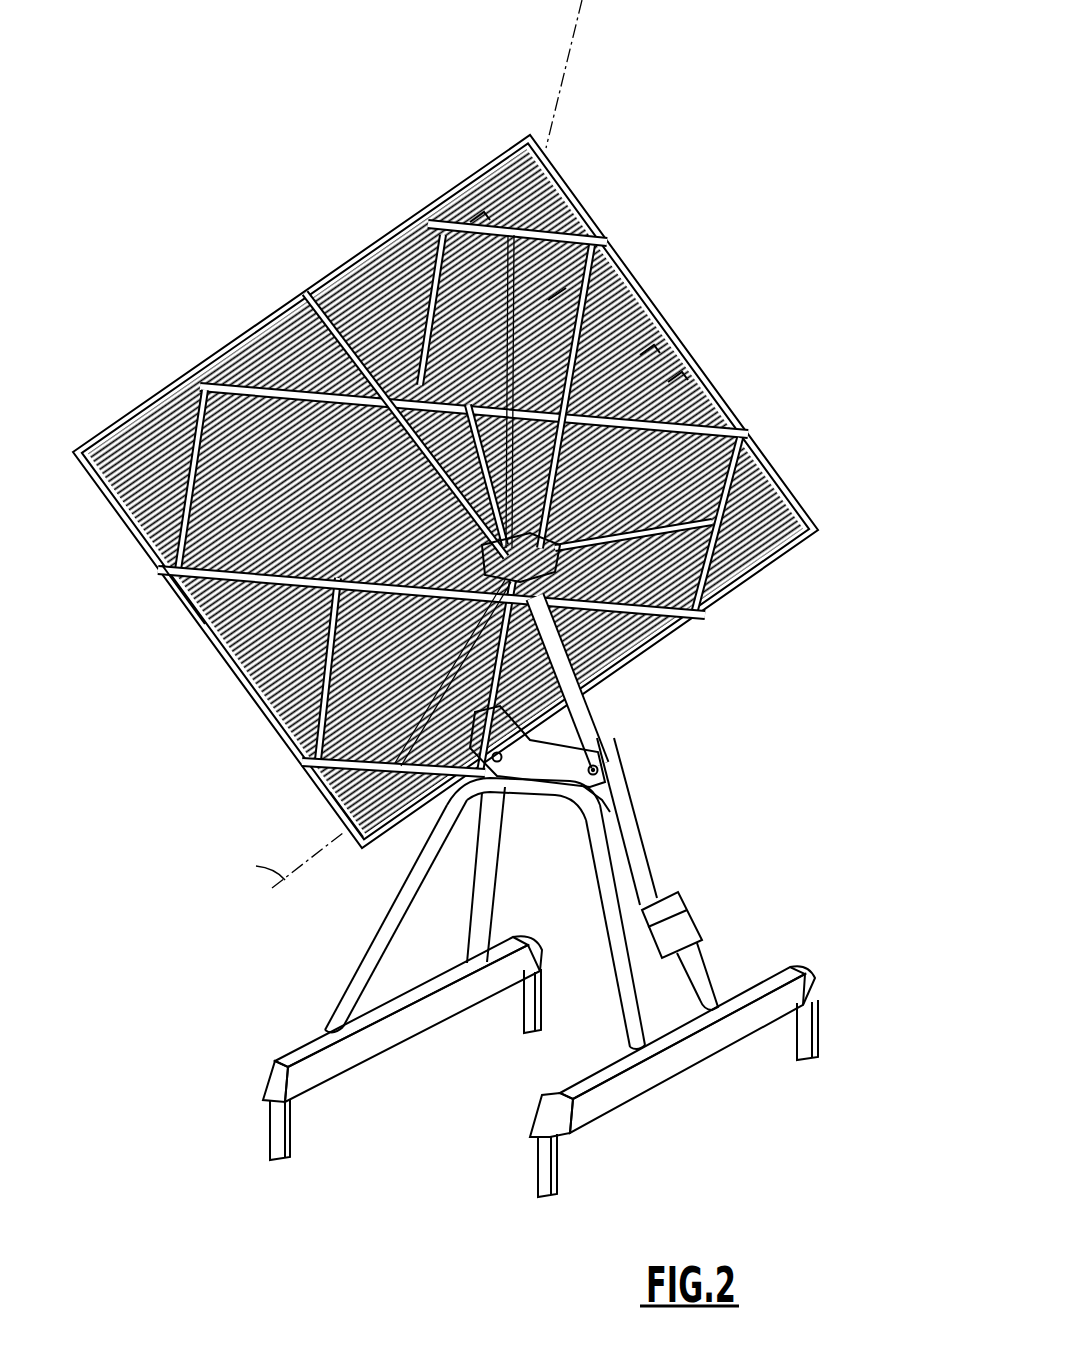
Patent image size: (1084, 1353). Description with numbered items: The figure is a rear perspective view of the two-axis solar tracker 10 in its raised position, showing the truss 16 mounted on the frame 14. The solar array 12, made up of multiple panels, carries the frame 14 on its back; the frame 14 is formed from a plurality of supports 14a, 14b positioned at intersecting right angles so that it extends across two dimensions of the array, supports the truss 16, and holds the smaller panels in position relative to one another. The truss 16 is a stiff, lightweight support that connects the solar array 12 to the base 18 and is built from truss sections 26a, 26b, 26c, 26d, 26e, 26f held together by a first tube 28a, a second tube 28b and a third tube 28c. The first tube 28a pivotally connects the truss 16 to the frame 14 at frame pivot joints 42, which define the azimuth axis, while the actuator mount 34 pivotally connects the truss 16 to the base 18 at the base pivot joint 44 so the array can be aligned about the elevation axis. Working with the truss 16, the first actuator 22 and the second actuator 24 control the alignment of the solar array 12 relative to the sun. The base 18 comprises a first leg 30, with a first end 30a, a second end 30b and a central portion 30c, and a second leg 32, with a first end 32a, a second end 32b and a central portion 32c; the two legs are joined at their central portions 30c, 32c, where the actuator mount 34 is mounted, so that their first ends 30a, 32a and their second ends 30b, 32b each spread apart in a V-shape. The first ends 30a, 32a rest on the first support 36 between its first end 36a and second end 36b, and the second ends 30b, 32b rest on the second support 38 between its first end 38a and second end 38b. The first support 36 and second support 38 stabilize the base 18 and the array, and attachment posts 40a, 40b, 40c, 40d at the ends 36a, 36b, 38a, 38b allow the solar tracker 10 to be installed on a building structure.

The two-axis solar tracker 10 is at (485, 605).
The solar array 12 is at (292, 336).
The frame 14 is at (477, 525).
The support 14a is at (736, 429).
The support 14b is at (192, 425).
The truss 16 is at (568, 288).
The base 18 is at (545, 1060).
The first actuator 22 is at (682, 541).
The second actuator 24 is at (641, 830).
The truss section 26a is at (588, 220).
The truss section 26b is at (440, 282).
The truss section 26c is at (160, 570).
The truss section 26d is at (184, 606).
The truss section 26e is at (300, 742).
The truss section 26f is at (353, 822).
The first tube 28a is at (481, 212).
The second tube 28b is at (651, 351).
The third tube 28c is at (677, 379).
The first leg 30 is at (629, 880).
The first end 30a is at (491, 873).
The second end 30b is at (712, 1000).
The central portion 30c is at (598, 790).
The second leg 32 is at (451, 913).
The first end 32a is at (397, 907).
The second end 32b is at (610, 933).
The central portion 32c is at (517, 790).
The actuator mount 34 is at (541, 750).
The first support 36 is at (393, 1019).
The first end 36a is at (532, 962).
The second end 36b is at (277, 1077).
The second support 38 is at (679, 1051).
The first end 38a is at (813, 980).
The second end 38b is at (542, 1117).
The attachment post 40a is at (528, 1017).
The attachment post 40b is at (278, 1137).
The attachment post 40c is at (808, 1033).
The attachment post 40d is at (543, 1173).
The frame pivot joints 42 is at (511, 228).
The base pivot joint 44 is at (578, 681).